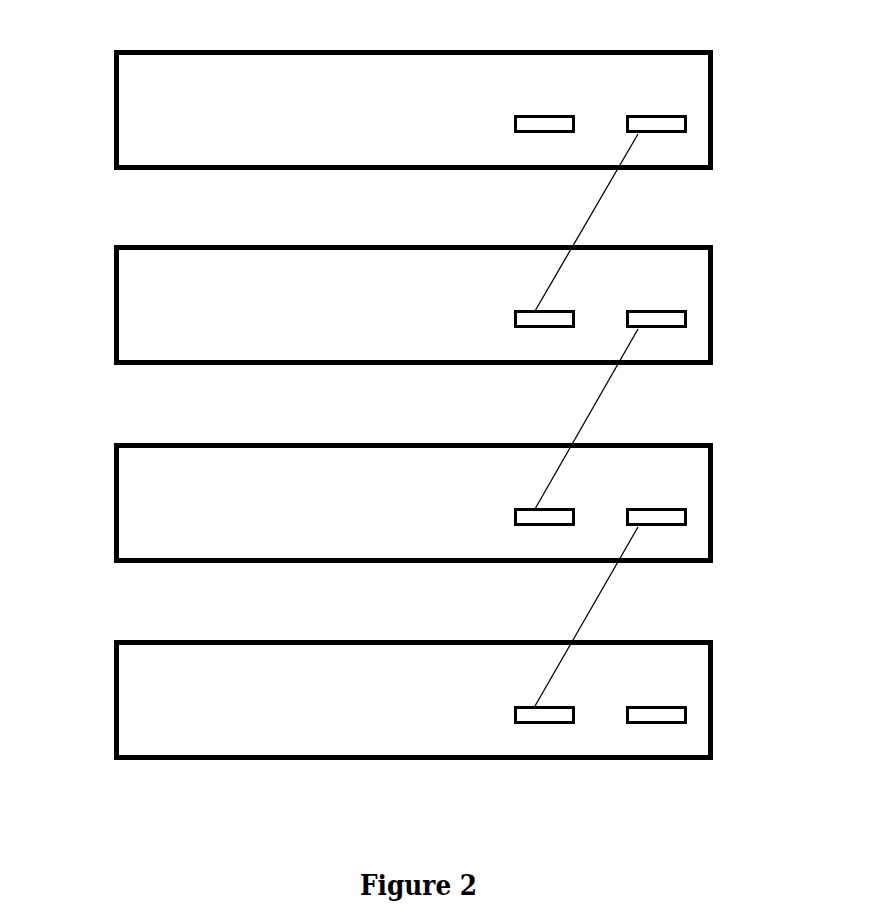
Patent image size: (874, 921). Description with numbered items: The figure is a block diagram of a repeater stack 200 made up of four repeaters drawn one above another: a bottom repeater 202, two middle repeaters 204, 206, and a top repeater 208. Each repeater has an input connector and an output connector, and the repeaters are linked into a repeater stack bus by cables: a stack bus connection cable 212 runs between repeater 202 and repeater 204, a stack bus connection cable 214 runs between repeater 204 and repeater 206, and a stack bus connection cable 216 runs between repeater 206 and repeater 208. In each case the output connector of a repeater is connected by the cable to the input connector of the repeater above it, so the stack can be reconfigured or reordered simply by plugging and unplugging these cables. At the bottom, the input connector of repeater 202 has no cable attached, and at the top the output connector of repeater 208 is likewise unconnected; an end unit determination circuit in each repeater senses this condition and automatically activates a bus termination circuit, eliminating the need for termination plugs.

The repeater stack 200 is at (80, 46).
The bottom repeater 202 is at (713, 702).
The middle repeater 204 is at (713, 507).
The middle repeater 206 is at (713, 309).
The top repeater 208 is at (713, 113).
The stack bus connection cable 212 is at (590, 610).
The stack bus connection cable 214 is at (598, 403).
The stack bus connection cable 216 is at (602, 198).